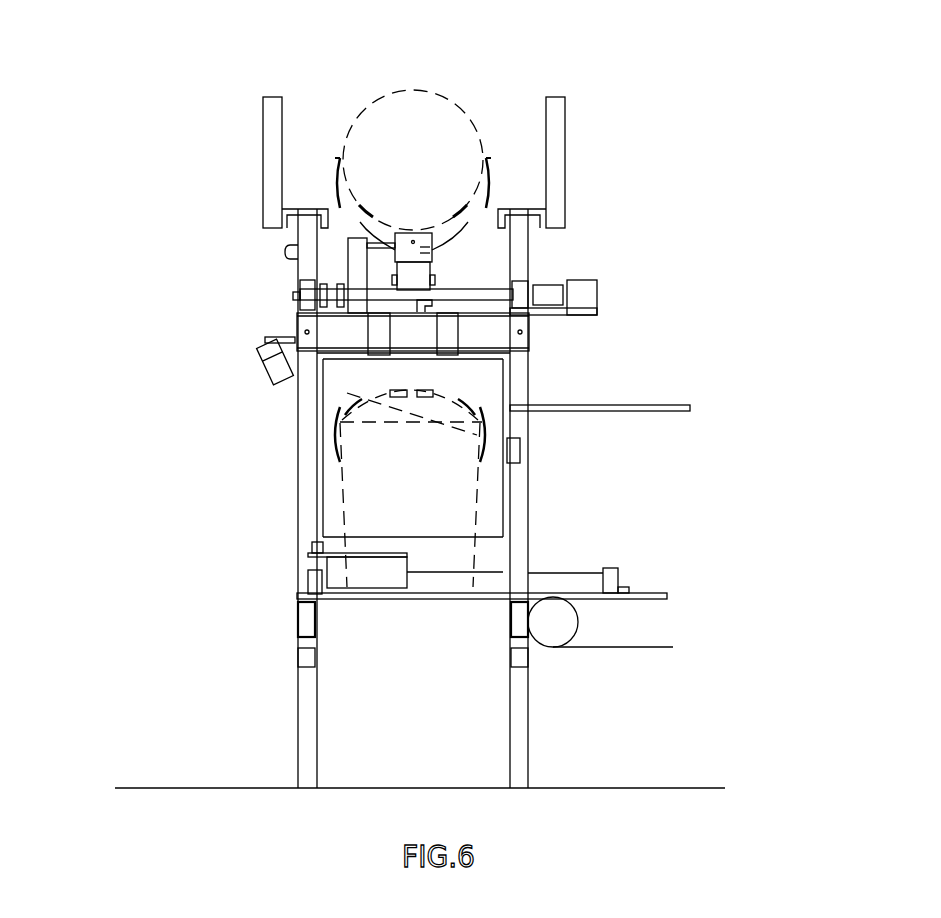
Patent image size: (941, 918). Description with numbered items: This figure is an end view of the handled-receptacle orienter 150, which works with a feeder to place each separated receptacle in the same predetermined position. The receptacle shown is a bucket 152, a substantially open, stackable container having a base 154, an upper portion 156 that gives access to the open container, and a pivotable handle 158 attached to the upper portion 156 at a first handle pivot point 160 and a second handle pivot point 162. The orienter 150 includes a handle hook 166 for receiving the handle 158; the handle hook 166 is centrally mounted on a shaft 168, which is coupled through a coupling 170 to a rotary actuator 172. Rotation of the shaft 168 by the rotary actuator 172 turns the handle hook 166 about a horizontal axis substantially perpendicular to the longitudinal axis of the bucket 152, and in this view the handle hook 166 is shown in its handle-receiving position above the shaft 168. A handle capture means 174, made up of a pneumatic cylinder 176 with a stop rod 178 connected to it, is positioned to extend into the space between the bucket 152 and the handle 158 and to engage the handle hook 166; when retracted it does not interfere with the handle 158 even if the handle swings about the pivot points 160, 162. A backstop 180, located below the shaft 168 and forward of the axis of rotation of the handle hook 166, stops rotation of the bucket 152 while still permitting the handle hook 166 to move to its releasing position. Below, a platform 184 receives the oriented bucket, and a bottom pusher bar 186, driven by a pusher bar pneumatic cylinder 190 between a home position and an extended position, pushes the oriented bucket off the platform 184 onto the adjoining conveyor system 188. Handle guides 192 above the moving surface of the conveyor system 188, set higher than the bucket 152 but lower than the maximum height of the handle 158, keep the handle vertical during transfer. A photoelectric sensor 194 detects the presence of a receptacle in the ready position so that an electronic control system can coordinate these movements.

The orienter 150 is at (731, 198).
The bucket 152 is at (432, 87).
The base 154 is at (483, 590).
The upper portion 156 is at (463, 108).
The handle 158 is at (493, 191).
The first handle pivot point 160 is at (486, 158).
The second handle pivot point 162 is at (338, 155).
The handle hook 166 is at (470, 290).
The shaft 168 is at (475, 282).
The coupling 170 is at (550, 284).
The rotary actuator 172 is at (587, 298).
The handle capture means 174 is at (285, 262).
The pneumatic cylinder 176 is at (285, 250).
The stop rod 178 is at (393, 250).
The backstop 180 is at (480, 372).
The platform 184 is at (365, 600).
The bottom pusher bar 186 is at (335, 578).
The adjoining conveyor system 188 is at (610, 632).
The pusher bar pneumatic cylinder 190 is at (587, 573).
The handle guides 192 is at (663, 413).
The photoelectric sensor 194 is at (265, 373).